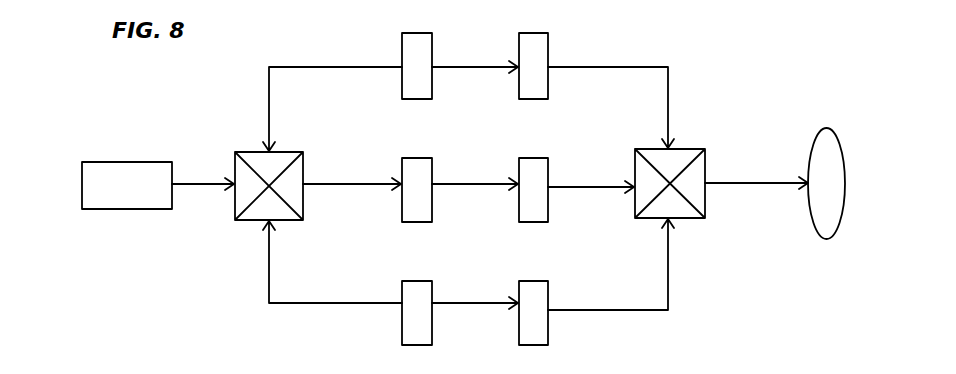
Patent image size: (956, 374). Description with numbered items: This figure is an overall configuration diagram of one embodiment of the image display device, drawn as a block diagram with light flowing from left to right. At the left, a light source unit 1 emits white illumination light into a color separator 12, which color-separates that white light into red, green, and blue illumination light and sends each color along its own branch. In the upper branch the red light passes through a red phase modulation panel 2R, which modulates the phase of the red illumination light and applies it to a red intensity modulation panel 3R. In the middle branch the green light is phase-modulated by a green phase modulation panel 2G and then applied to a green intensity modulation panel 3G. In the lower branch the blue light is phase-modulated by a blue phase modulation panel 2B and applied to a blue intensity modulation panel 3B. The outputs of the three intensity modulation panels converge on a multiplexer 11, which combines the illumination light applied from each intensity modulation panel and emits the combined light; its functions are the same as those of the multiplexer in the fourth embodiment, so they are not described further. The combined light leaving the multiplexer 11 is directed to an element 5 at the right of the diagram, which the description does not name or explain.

The light source unit 1 is at (82, 187).
The color separator 12 is at (235, 152).
The red phase modulation panel 2R is at (402, 36).
The red intensity modulation panel 3R is at (519, 42).
The green phase modulation panel 2G is at (402, 162).
The green intensity modulation panel 3G is at (519, 165).
The blue phase modulation panel 2B is at (402, 284).
The blue intensity modulation panel 3B is at (519, 285).
The multiplexer 11 is at (635, 163).
The projection lens 5 is at (815, 130).